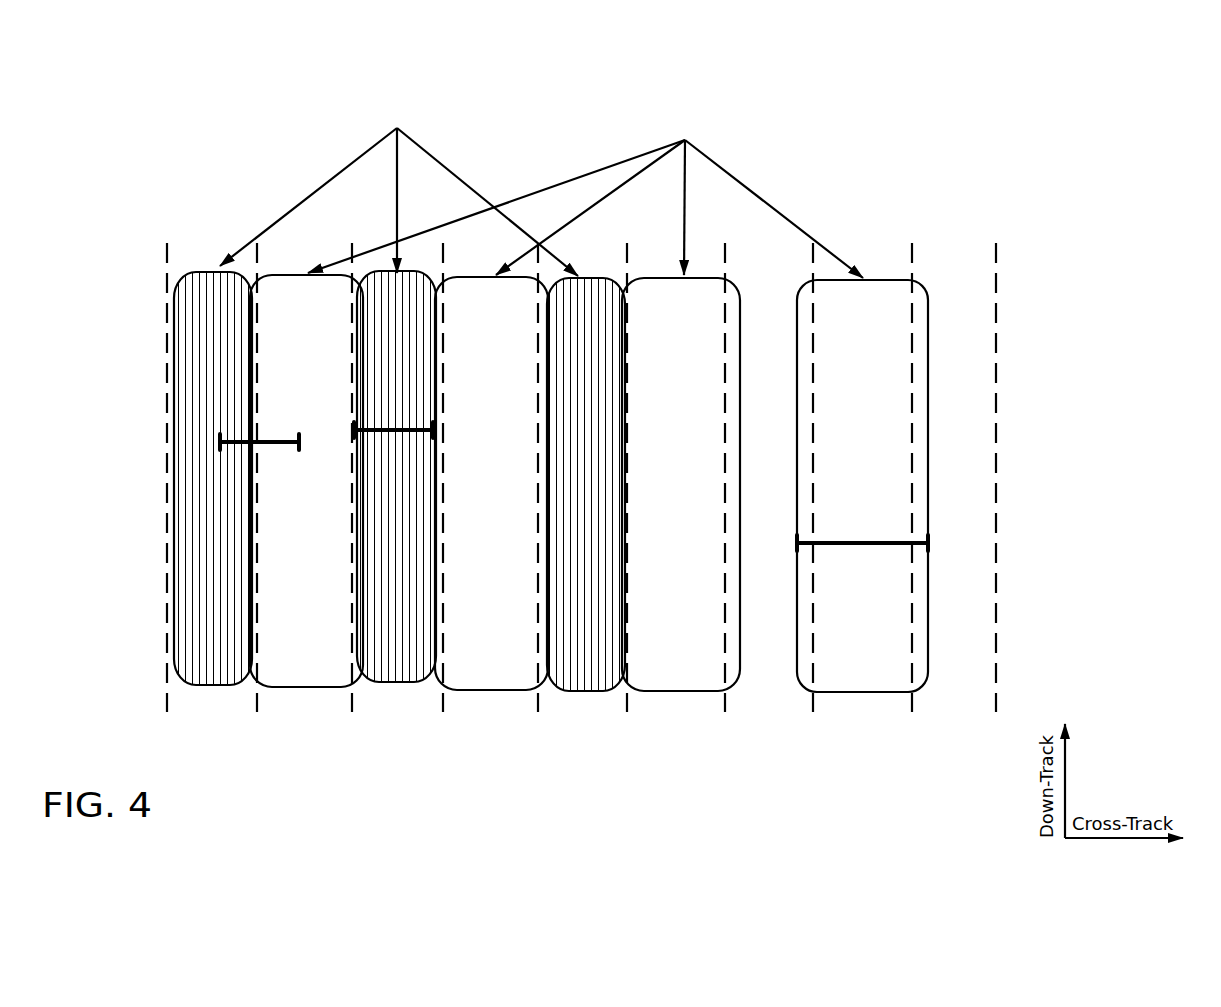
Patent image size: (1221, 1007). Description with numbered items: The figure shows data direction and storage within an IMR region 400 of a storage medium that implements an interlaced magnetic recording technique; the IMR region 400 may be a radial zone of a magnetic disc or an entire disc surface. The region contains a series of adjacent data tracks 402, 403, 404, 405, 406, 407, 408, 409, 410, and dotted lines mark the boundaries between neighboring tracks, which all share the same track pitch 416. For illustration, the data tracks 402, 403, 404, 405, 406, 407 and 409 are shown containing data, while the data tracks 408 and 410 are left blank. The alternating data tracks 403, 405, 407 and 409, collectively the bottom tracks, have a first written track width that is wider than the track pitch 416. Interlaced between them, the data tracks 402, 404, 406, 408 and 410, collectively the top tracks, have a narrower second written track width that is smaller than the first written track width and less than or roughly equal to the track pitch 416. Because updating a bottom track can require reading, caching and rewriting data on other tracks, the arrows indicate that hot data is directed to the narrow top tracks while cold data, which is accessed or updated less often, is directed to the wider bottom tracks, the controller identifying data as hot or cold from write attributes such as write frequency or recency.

The IMR region 400 is at (151, 92).
The data track 402 is at (195, 328).
The data track 403 is at (286, 328).
The data track 404 is at (380, 328).
The data track 405 is at (473, 328).
The data track 406 is at (563, 328).
The data track 407 is at (661, 328).
The data track 408 is at (756, 328).
The data track 409 is at (850, 328).
The data track 410 is at (931, 328).
The track pitch 416 is at (259, 434).